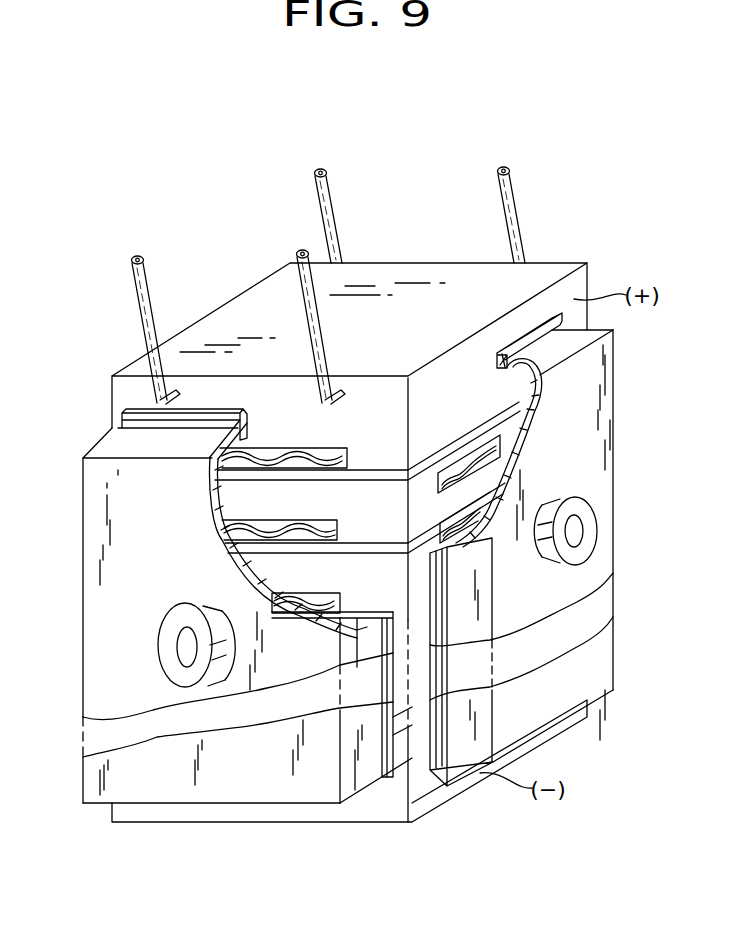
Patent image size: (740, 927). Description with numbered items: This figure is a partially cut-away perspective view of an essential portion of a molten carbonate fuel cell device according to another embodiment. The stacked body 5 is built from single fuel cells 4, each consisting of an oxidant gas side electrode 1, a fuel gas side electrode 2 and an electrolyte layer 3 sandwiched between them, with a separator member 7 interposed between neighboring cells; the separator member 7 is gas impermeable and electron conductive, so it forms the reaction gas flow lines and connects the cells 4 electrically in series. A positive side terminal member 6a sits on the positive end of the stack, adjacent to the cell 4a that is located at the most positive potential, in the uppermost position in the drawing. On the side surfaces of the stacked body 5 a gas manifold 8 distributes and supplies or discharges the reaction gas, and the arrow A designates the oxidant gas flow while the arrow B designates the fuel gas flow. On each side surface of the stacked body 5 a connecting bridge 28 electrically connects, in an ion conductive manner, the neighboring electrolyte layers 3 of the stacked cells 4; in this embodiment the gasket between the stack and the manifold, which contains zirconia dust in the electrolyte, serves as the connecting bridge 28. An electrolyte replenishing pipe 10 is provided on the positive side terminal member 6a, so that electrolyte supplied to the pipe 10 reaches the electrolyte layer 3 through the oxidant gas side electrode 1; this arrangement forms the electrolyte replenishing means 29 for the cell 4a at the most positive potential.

The oxidant gas side electrode 1 is at (350, 458).
The fuel gas side electrode 2 is at (436, 478).
The electrolyte layer 3 is at (430, 456).
The single fuel cell 4 is at (393, 613).
The cell located in the most positive potential 4a is at (462, 440).
The stacked body 5 is at (384, 812).
The positive side terminal member 6a is at (383, 386).
The separator member 7 is at (350, 524).
The gas manifold 8 is at (105, 775).
The electrolyte replenishing pipe 10 is at (133, 285).
The connecting bridge 28 is at (245, 430).
The electrolyte replenishing means 29 is at (175, 312).
The oxidant gas flow A is at (183, 642).
The fuel gas flow B is at (578, 532).